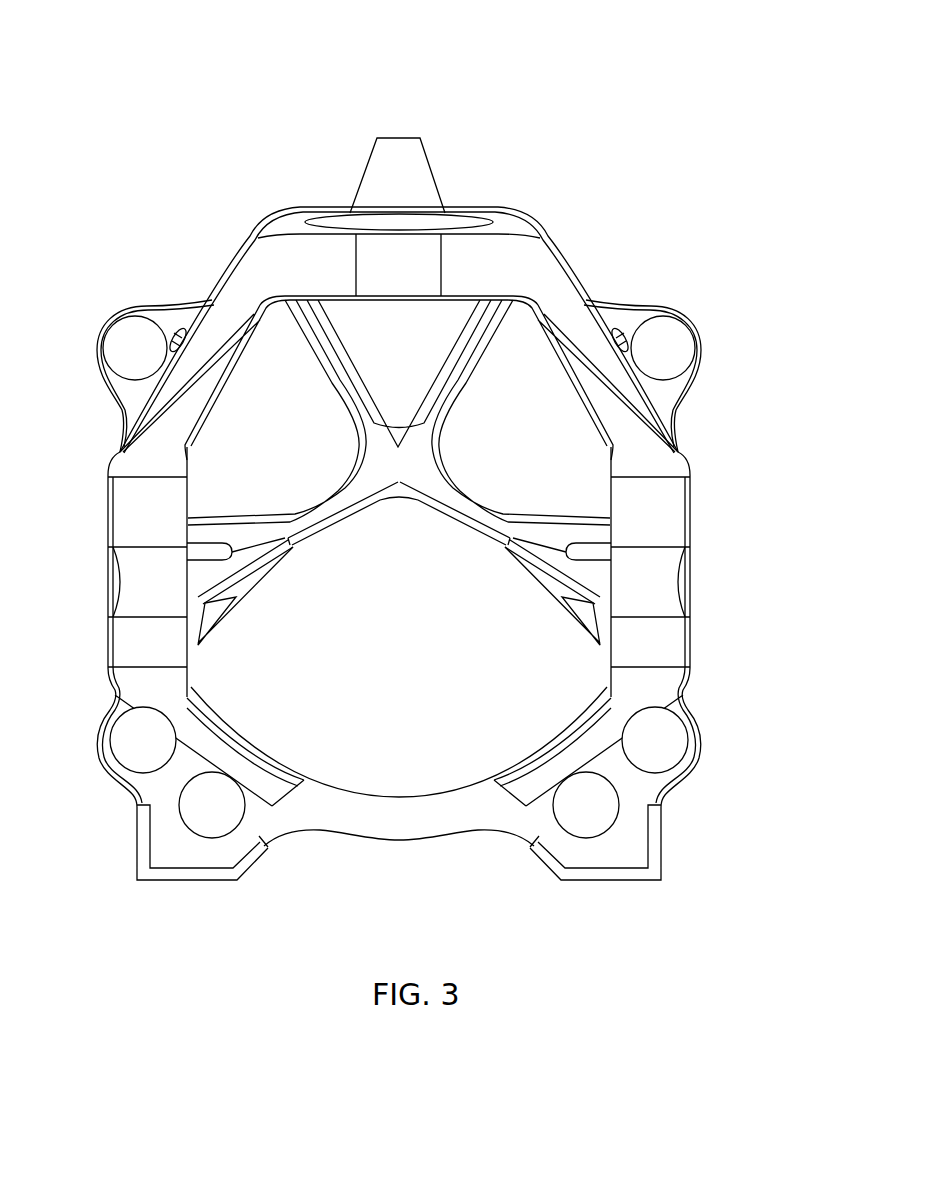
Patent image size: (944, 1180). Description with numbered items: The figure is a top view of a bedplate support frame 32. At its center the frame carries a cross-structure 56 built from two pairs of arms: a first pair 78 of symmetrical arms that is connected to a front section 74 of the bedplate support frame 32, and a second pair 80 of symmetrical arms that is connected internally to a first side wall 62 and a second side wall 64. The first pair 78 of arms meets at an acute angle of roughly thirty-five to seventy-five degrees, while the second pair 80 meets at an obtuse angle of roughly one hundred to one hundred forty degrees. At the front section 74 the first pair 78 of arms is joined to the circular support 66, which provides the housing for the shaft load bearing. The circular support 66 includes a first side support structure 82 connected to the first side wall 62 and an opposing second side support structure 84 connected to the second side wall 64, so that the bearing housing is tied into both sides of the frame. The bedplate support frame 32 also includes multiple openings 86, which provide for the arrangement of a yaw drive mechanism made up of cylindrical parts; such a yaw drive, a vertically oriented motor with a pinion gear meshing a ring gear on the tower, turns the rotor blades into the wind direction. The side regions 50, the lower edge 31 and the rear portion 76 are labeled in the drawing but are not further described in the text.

The bedplate support frame 32 is at (678, 78).
The circular support 66 is at (293, 218).
The front section 74 is at (570, 219).
The second side support structure 84 is at (237, 328).
The first side support structure 82 is at (563, 327).
The multiple openings 86 is at (123, 330).
The first pair of symmetrical arms 78 is at (430, 380).
The second pair of symmetrical arms 80 is at (440, 513).
The cross-structure 56 is at (455, 580).
The side portions 50 is at (88, 578).
The second side wall 64 is at (107, 650).
The first side wall 62 is at (690, 640).
The lower arcuate edge 31 is at (397, 797).
The lower portion 76 is at (704, 827).